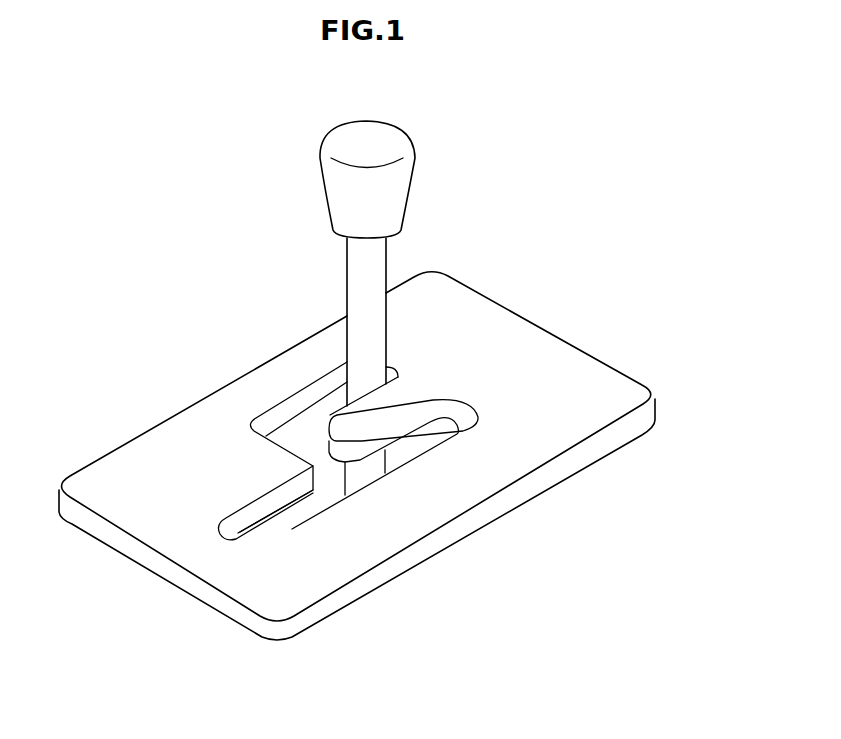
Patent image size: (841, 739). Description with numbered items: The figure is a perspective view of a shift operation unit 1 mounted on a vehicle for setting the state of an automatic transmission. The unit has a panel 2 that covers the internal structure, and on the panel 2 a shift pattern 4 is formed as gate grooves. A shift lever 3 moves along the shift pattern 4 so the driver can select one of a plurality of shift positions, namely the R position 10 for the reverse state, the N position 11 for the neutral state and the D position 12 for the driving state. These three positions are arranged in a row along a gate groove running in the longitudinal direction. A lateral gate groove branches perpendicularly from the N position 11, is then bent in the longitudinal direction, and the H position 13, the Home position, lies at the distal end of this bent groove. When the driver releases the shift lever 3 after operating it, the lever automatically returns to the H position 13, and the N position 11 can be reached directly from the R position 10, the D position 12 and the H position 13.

The shift operation unit 1 is at (369, 411).
The panel 2 is at (286, 594).
The shift lever 3 is at (358, 278).
The shift pattern 4 is at (284, 412).
The R position 10 is at (490, 410).
The N position 11 is at (401, 503).
The D position 12 is at (218, 565).
The H position 13 is at (416, 344).